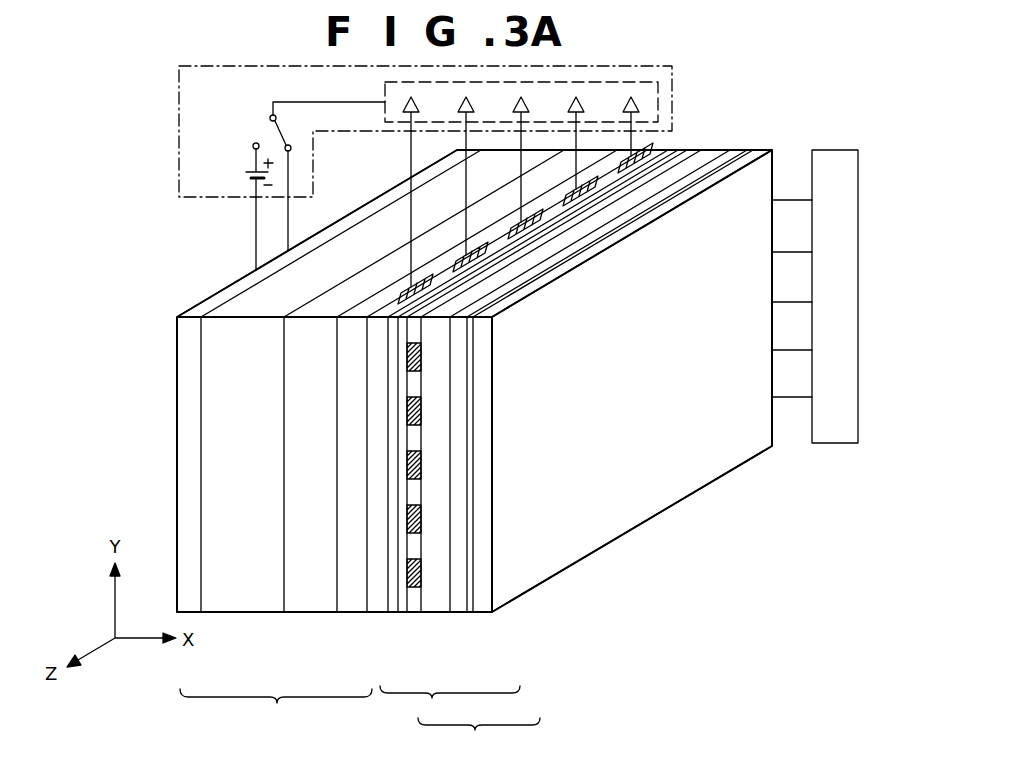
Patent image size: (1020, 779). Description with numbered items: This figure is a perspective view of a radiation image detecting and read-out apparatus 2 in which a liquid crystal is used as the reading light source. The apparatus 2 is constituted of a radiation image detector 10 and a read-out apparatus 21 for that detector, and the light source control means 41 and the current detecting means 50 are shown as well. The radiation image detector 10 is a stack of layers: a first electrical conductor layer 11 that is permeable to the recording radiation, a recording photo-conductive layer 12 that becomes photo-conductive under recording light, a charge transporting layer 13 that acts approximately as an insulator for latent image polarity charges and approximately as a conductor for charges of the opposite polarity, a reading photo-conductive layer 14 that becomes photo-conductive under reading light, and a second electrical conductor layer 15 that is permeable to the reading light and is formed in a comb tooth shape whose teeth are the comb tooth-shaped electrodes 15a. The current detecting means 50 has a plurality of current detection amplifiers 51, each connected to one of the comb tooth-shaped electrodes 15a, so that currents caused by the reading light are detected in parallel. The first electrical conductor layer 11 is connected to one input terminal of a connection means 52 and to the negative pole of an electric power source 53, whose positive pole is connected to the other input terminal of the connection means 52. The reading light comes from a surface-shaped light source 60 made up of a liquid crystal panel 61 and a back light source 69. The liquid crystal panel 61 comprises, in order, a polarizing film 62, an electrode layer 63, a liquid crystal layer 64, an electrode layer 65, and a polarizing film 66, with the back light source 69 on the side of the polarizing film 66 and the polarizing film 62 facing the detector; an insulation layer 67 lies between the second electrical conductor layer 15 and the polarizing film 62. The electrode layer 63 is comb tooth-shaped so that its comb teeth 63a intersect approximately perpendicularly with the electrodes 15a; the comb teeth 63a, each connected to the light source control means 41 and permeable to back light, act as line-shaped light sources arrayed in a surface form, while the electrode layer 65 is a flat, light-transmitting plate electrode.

The radiation image detecting and read-out apparatus 2 is at (119, 96).
The radiation image detector 10 is at (276, 708).
The first electrical conductor layer 11 is at (192, 612).
The recording photo-conductive layer 12 is at (232, 612).
The charge transporting layer 13 is at (302, 610).
The reading photo-conductive layer 14 is at (350, 612).
The second electrical conductor layer 15 is at (378, 612).
The comb tooth-shaped electrodes 15a is at (660, 151).
The read-out apparatus 21 is at (779, 103).
The light source control means 41 is at (860, 150).
The current detecting means 50 is at (672, 79).
The current detection amplifiers 51 is at (639, 101).
The connection means 52 is at (271, 136).
The electric power source 53 is at (248, 178).
The surface-shaped light source 60 is at (479, 735).
The liquid crystal panel 61 is at (450, 704).
The polarizing film 62 is at (400, 608).
The electrode layer 63 is at (415, 610).
The comb teeth 63a is at (423, 610).
The liquid crystal layer 64 is at (443, 608).
The electrode layer 65 is at (457, 610).
The polarizing film 66 is at (472, 608).
The insulation layer 67 is at (392, 608).
The back light source 69 is at (487, 608).